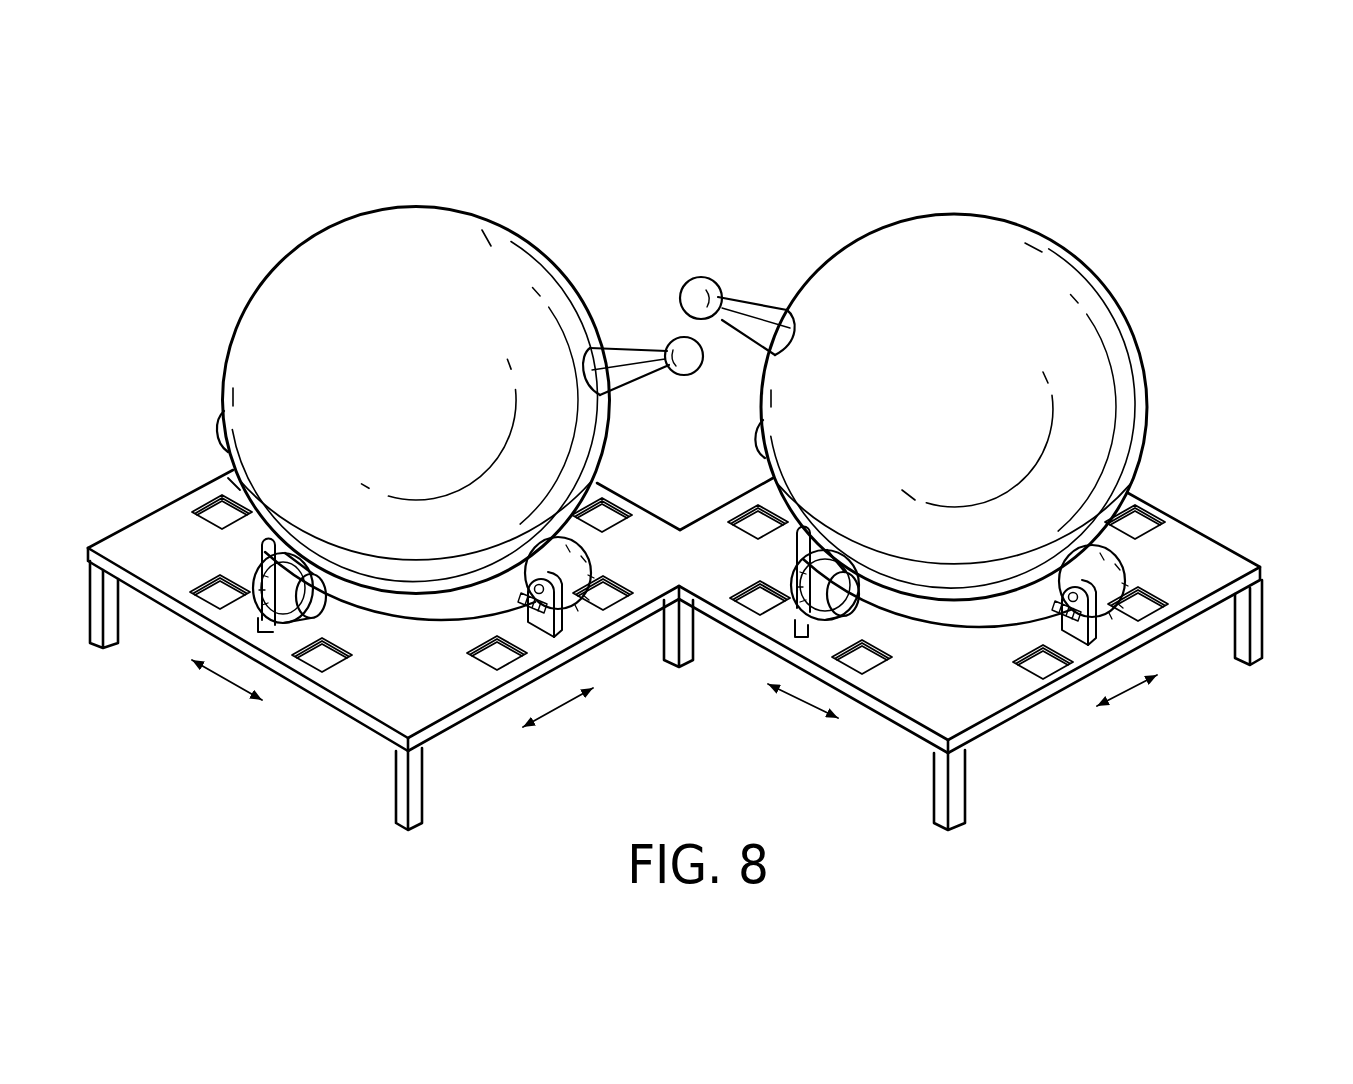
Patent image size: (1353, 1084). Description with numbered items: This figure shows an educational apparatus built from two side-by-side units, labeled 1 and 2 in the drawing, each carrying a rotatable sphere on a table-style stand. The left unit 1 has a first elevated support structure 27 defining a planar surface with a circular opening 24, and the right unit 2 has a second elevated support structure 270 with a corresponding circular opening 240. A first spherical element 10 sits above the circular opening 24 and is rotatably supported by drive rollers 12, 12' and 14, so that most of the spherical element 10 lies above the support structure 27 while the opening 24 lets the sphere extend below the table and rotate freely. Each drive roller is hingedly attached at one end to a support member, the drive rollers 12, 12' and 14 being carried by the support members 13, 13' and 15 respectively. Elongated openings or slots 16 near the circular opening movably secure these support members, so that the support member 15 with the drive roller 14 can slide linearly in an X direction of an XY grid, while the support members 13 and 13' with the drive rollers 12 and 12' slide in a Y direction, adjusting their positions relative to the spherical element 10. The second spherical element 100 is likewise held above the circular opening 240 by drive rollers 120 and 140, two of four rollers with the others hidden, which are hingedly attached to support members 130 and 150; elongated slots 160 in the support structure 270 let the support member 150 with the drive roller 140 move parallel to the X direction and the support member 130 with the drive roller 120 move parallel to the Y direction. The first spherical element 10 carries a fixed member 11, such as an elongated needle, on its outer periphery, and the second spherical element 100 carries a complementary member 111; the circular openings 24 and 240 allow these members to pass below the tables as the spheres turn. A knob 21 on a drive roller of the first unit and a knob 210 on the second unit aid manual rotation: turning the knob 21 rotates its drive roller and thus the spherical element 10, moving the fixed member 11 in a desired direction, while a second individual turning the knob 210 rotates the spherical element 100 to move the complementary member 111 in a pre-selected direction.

The first sphere positioning apparatus 1 is at (247, 213).
The second sphere positioning apparatus 2 is at (1104, 233).
The first spherical element 10 is at (486, 242).
The second spherical element 100 is at (893, 243).
The fixed member 11 is at (615, 350).
The complementary member 111 is at (747, 300).
The drive roller 12 is at (584, 639).
The drive roller 12' is at (169, 406).
The support member 13 is at (605, 643).
The support member 13' is at (170, 453).
The drive roller 14 is at (222, 597).
The support member 15 is at (273, 603).
The elongated opening 16 is at (320, 658).
The knob 21 is at (312, 582).
The circular opening 24 is at (437, 623).
The first elevated support structure 27 is at (371, 690).
The drive roller 120 is at (1127, 570).
The support member 130 is at (1137, 607).
The drive roller 140 is at (842, 578).
The support member 150 is at (823, 642).
The elongated opening 160 is at (862, 663).
The knob 210 is at (842, 587).
The circular opening 240 is at (973, 633).
The second elevated support structure 270 is at (923, 707).